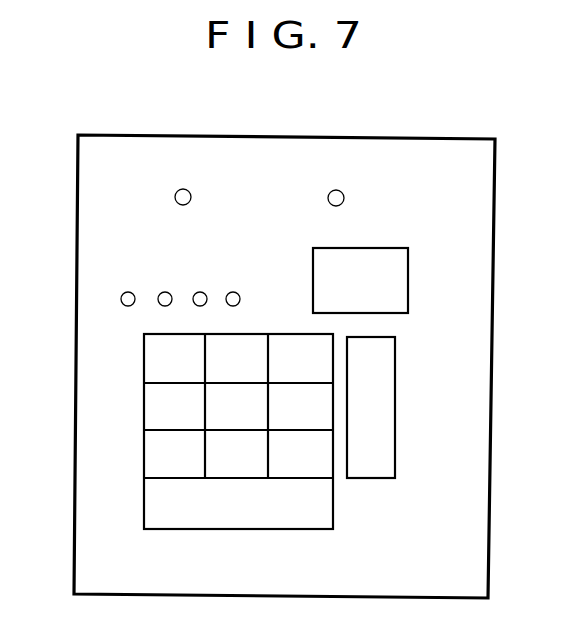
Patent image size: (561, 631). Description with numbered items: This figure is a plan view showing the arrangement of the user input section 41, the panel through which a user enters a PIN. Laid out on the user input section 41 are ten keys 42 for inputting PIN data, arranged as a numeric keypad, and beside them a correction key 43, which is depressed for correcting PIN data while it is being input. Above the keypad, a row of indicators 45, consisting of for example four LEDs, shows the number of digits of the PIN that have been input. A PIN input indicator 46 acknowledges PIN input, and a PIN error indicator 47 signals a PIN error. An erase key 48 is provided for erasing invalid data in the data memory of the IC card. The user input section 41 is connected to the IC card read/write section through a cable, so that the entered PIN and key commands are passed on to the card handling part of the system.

The user input section 41 is at (497, 204).
The ten keys 42 is at (229, 530).
The correction key 43 is at (396, 401).
The indicators 45 is at (110, 297).
The PIN input indicator 46 is at (183, 136).
The PIN error indicator 47 is at (352, 138).
The erase key 48 is at (409, 286).